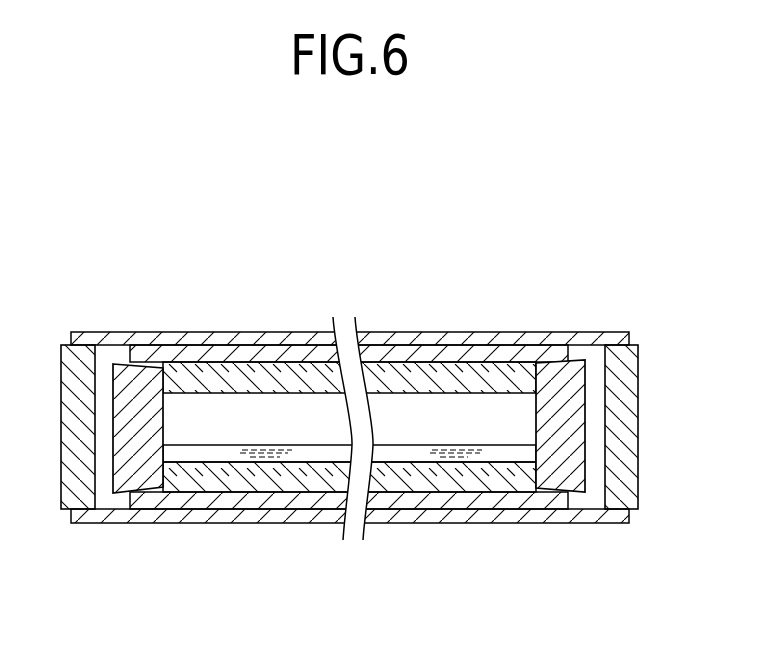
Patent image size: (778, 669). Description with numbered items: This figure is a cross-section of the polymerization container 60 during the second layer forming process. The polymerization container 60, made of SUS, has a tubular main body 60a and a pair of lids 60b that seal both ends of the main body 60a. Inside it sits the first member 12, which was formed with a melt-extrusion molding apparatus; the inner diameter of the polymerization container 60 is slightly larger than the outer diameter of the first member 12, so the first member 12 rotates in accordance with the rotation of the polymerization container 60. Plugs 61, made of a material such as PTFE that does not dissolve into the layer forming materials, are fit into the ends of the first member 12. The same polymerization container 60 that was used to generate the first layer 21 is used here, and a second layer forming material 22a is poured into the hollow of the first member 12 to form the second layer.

The polymerization container 60 is at (516, 215).
The tubular main body 60a is at (458, 343).
The lids 60b is at (640, 352).
The plugs 61 is at (121, 362).
The first member 12 is at (172, 357).
The first layer 21 is at (212, 373).
The second layer forming material 22a is at (173, 450).